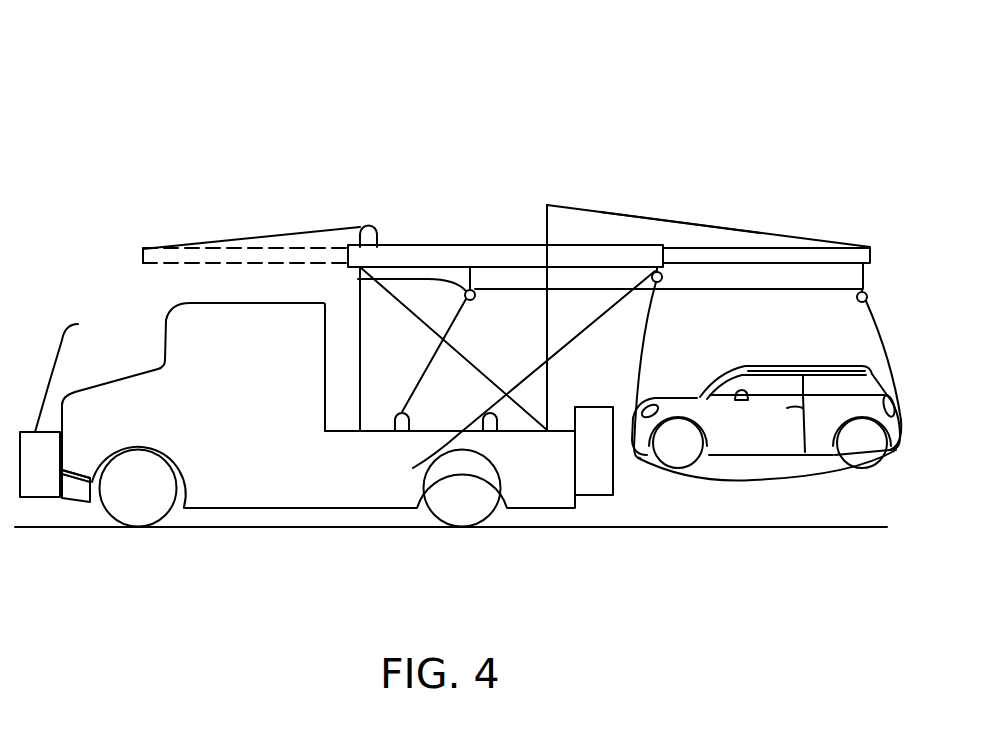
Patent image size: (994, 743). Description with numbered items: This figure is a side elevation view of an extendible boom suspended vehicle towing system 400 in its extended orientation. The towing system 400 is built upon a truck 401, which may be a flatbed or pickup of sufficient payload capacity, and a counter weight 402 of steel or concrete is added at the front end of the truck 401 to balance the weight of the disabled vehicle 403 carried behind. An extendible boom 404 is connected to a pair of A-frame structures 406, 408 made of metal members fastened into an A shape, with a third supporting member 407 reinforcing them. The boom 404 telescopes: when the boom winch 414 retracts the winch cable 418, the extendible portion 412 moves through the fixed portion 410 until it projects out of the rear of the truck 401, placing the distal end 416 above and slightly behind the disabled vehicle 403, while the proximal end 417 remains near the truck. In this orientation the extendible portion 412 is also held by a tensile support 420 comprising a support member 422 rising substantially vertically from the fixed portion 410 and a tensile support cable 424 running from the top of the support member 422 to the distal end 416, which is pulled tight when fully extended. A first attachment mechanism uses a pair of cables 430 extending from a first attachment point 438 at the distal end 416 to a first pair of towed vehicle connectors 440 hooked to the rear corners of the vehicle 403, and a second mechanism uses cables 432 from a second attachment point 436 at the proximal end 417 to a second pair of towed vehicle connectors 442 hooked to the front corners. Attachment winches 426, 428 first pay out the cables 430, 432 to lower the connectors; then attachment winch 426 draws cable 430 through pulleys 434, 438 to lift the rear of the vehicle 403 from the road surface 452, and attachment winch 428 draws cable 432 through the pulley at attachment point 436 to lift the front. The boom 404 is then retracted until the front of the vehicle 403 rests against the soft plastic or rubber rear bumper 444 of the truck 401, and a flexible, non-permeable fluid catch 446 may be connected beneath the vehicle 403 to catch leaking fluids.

The extendible boom suspended vehicle towing system 400 is at (384, 80).
The truck 401 is at (245, 425).
The counter weight 402 is at (78, 324).
The disabled vehicle 403 is at (772, 438).
The extendible boom 404 is at (582, 226).
The A-frame structure 406 is at (358, 323).
The third supporting member 407 is at (410, 310).
The A-frame structure 408 is at (547, 338).
The fixed portion 410 is at (467, 245).
The extendible portion 412 is at (764, 247).
The boom winch 414 is at (383, 237).
The distal end 416 is at (870, 222).
The proximal end 417 is at (690, 226).
The winch cable 418 is at (310, 230).
The tensile support 420 is at (572, 180).
The support member 422 is at (547, 230).
The tensile support cable 424 is at (662, 218).
The attachment winch 426 is at (395, 425).
The attachment winch 428 is at (413, 467).
The cables 430 is at (780, 289).
The cables 432 is at (613, 308).
The pulley 434 is at (358, 280).
The second attachment point 436 is at (662, 282).
The first attachment point 438 is at (857, 297).
The towed vehicle connectors 440 is at (888, 452).
The towed vehicle connectors 442 is at (640, 458).
The rear bumper 444 is at (597, 496).
The fluid catch 446 is at (753, 482).
The road surface 452 is at (373, 527).